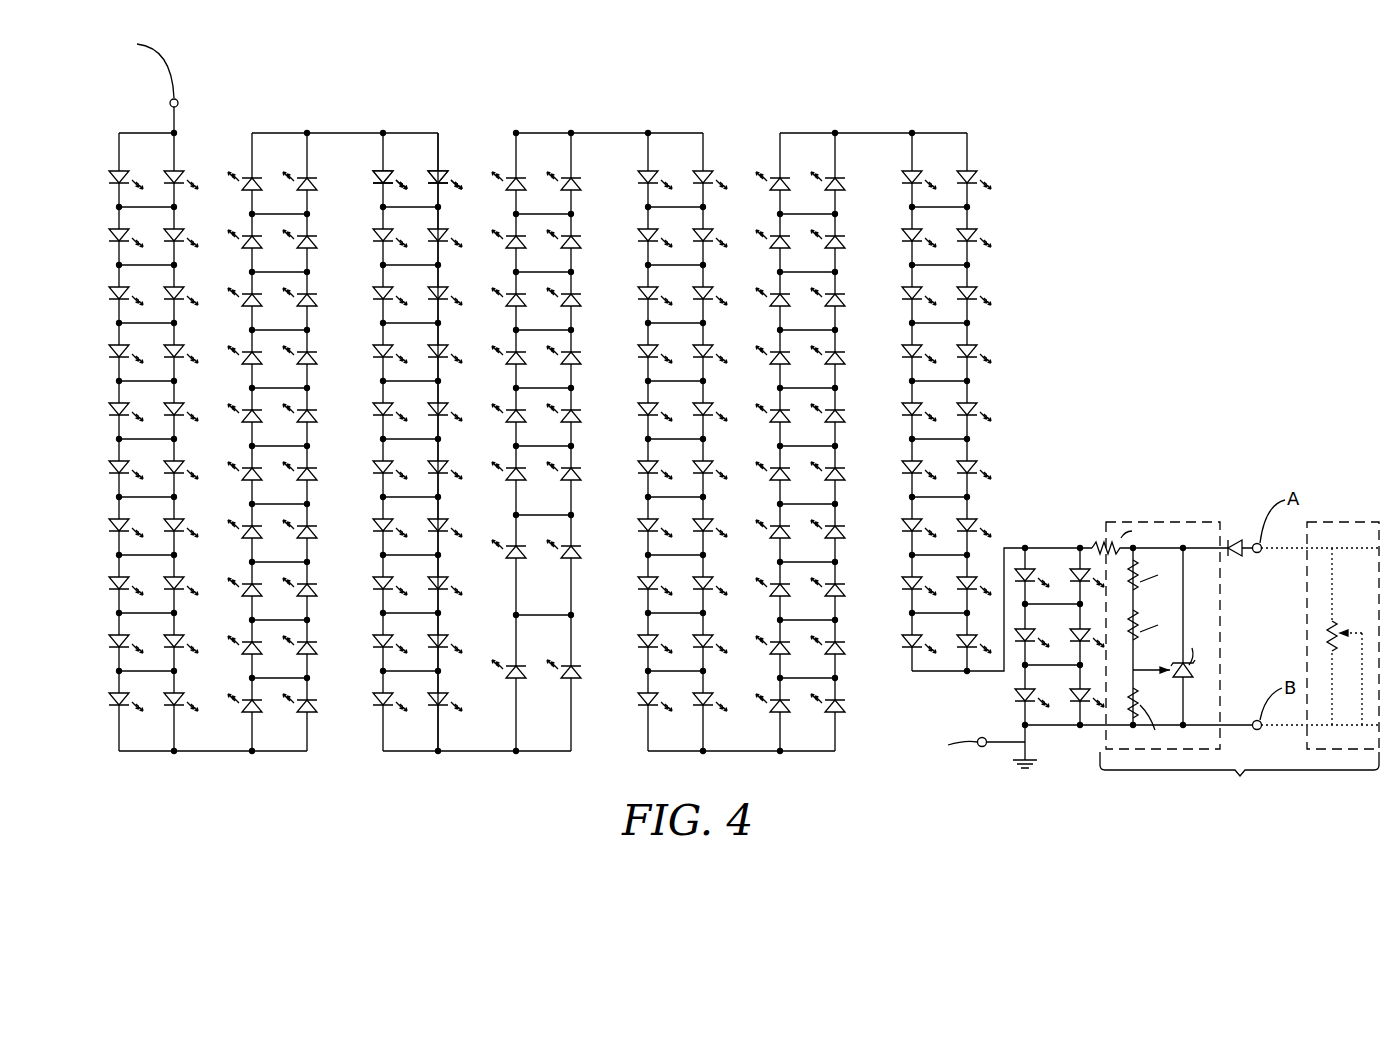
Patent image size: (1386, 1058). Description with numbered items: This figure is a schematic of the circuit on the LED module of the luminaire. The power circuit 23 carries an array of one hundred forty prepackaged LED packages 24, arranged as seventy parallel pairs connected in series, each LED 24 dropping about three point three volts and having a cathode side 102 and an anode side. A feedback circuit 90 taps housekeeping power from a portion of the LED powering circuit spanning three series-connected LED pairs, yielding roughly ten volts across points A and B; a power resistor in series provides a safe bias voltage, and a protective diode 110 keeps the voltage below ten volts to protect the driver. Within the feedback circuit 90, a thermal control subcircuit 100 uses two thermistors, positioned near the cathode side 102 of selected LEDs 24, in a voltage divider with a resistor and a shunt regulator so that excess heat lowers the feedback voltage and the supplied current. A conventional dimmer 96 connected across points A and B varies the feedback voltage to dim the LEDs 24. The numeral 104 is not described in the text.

The power circuit 23 is at (489, 119).
The LED package 24 is at (376, 180).
The LED 104 is at (441, 172).
The cathode side 102 is at (443, 186).
The thermal control subcircuit 100 is at (1160, 520).
The protective diode 110 is at (1236, 542).
The dimmer 96 is at (1352, 520).
The feedback circuit 90 is at (1239, 776).